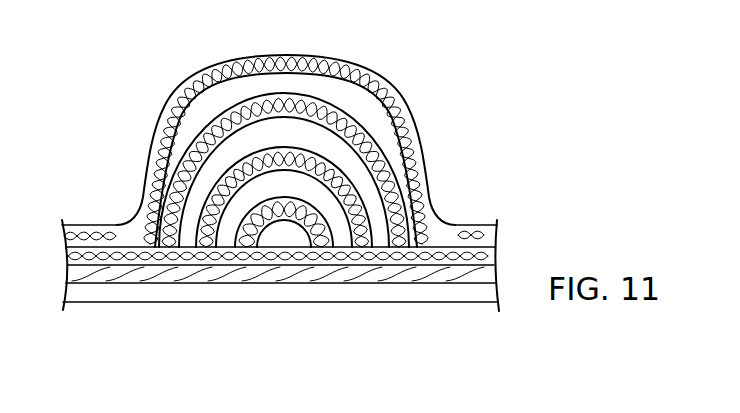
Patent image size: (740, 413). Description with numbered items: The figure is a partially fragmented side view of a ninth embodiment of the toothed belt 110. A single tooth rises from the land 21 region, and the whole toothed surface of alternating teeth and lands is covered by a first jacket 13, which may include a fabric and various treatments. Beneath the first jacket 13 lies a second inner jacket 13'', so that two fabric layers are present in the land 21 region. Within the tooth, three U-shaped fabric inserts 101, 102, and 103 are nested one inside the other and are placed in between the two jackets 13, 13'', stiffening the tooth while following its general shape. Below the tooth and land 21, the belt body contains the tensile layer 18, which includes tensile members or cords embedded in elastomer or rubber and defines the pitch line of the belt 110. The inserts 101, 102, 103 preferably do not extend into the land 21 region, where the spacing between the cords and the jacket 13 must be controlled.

The belt 110 is at (134, 86).
The first jacket 13 is at (308, 151).
The second inner jacket 13'' is at (279, 202).
The land 21 is at (472, 227).
The tensile layer 18 is at (132, 275).
The insert 101 is at (387, 230).
The insert 102 is at (348, 245).
The insert 103 is at (310, 222).